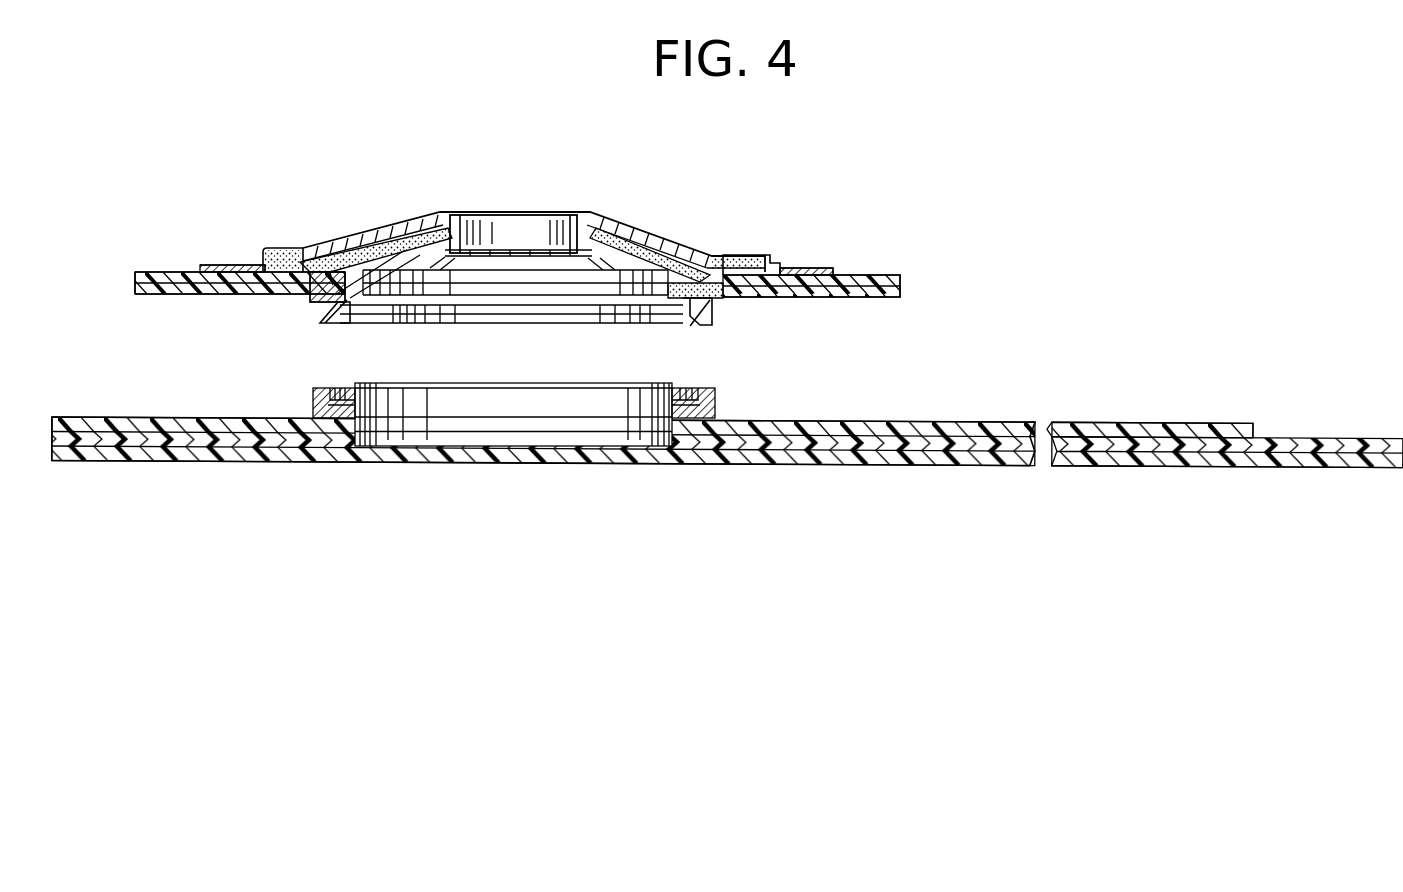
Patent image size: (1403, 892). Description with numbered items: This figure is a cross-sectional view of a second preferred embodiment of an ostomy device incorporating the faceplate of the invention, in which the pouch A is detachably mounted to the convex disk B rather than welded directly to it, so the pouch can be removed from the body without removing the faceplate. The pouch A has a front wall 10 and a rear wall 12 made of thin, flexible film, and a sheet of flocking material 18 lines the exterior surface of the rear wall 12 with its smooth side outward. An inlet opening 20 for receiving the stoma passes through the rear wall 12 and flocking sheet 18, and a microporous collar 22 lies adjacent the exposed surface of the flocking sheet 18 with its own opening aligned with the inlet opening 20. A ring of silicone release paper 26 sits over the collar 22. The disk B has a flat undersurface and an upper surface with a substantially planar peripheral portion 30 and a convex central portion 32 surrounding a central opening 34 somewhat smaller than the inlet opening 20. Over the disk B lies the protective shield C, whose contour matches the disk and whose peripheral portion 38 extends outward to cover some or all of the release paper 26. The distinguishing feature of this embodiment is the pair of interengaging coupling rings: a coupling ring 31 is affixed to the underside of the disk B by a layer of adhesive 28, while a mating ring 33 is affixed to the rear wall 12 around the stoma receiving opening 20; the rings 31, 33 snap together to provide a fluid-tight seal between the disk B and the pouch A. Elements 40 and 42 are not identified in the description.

The front wall 10 is at (1344, 468).
The rear wall 12 is at (1357, 438).
The flocking material sheet 18 is at (1160, 372).
The inlet opening 20 is at (436, 438).
The microporous collar 22 is at (905, 290).
The silicone release paper ring 26 is at (882, 273).
The layer of adhesive 28 is at (712, 262).
The planar peripheral portion 30 is at (296, 282).
The coupling ring 31 is at (702, 325).
The convex central portion 32 is at (368, 268).
The mating ring 33 is at (761, 368).
The central opening 34 is at (598, 262).
The peripheral portion 38 is at (858, 222).
The terminal housing 40 is at (466, 216).
The terminal contacts 42 is at (520, 252).
The pouch A is at (940, 468).
The convex disk B is at (673, 280).
The protective shield C is at (614, 213).